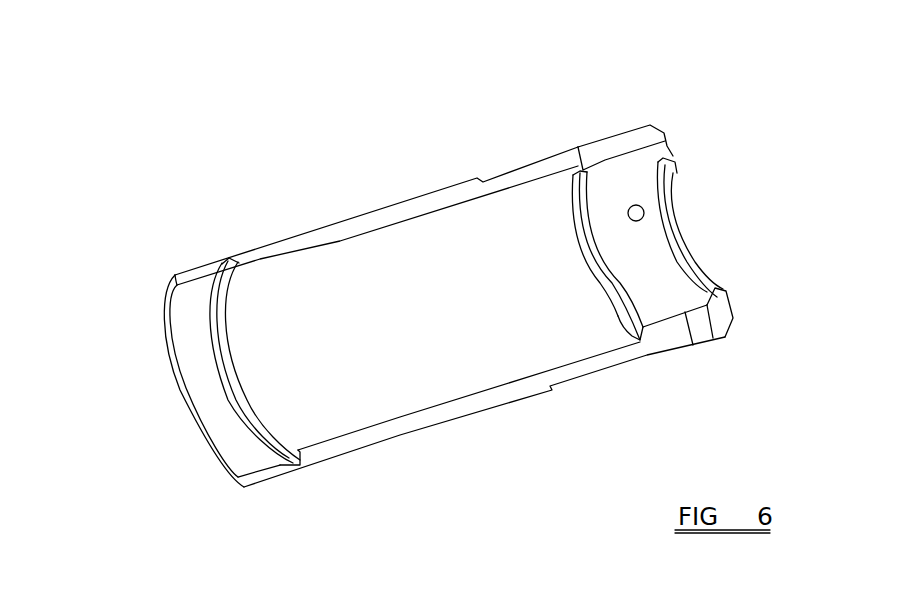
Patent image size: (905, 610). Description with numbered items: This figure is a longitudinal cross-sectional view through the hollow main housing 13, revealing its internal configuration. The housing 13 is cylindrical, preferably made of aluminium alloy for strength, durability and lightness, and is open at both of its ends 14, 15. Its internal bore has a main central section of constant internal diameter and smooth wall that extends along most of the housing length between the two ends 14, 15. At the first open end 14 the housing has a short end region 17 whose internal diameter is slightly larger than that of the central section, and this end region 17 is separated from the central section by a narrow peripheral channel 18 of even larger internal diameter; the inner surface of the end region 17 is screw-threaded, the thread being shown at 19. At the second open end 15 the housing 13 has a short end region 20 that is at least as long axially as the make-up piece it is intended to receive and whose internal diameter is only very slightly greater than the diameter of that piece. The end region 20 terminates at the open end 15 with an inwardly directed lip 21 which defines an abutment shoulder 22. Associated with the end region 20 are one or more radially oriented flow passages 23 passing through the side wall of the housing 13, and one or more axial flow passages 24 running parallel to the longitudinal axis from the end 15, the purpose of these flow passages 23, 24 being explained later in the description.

The main housing 13 is at (534, 121).
The first open end 14 is at (152, 428).
The second open end 15 is at (690, 201).
The end region 17 is at (263, 477).
The peripheral channel 18 is at (294, 464).
The screw thread 19 is at (228, 443).
The end region 20 is at (618, 315).
The inwardly directed lip 21 is at (720, 297).
The abutment shoulder 22 is at (673, 228).
The radial flow passage 23 is at (637, 205).
The axial flow passage 24 is at (660, 148).